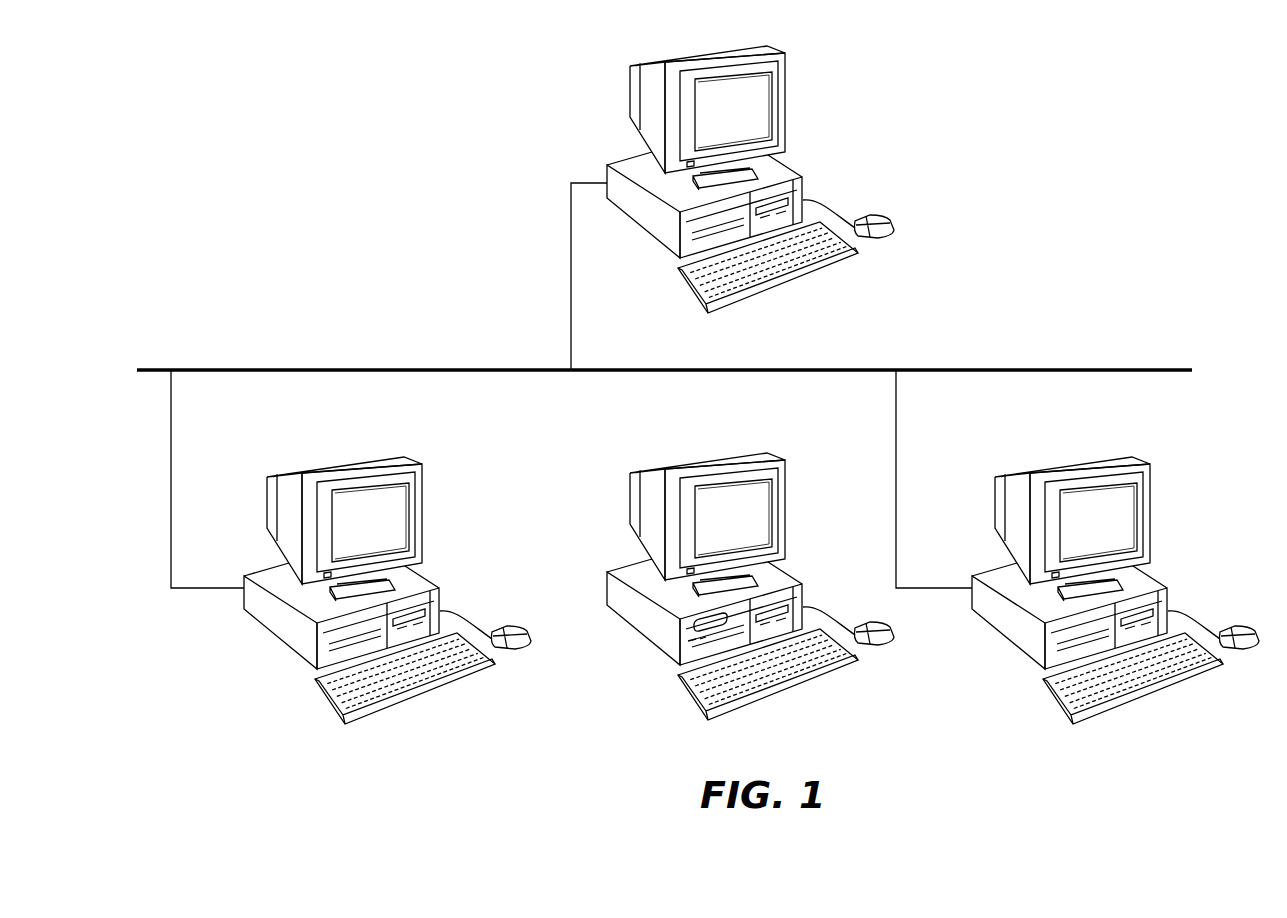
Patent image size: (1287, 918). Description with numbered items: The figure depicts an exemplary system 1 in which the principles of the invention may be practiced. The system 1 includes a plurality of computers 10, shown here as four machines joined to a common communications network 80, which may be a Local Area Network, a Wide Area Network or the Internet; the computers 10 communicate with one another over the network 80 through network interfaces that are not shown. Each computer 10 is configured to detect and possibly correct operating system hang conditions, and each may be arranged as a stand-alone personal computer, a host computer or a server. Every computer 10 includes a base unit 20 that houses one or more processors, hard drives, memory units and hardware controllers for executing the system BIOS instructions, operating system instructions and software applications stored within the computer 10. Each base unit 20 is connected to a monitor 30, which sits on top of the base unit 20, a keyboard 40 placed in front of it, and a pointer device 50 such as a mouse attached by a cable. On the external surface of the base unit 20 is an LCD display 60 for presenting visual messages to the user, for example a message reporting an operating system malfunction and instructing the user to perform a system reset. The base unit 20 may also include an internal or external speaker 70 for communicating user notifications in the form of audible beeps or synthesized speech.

The exemplary system 1 is at (978, 129).
The computer 10 is at (624, 137).
The base unit 20 is at (787, 583).
The monitor 30 is at (723, 470).
The keyboard 40 is at (783, 698).
The pointer device 50 is at (868, 650).
The LCD display 60 is at (697, 638).
The speaker 70 is at (685, 650).
The communications network 80 is at (975, 368).